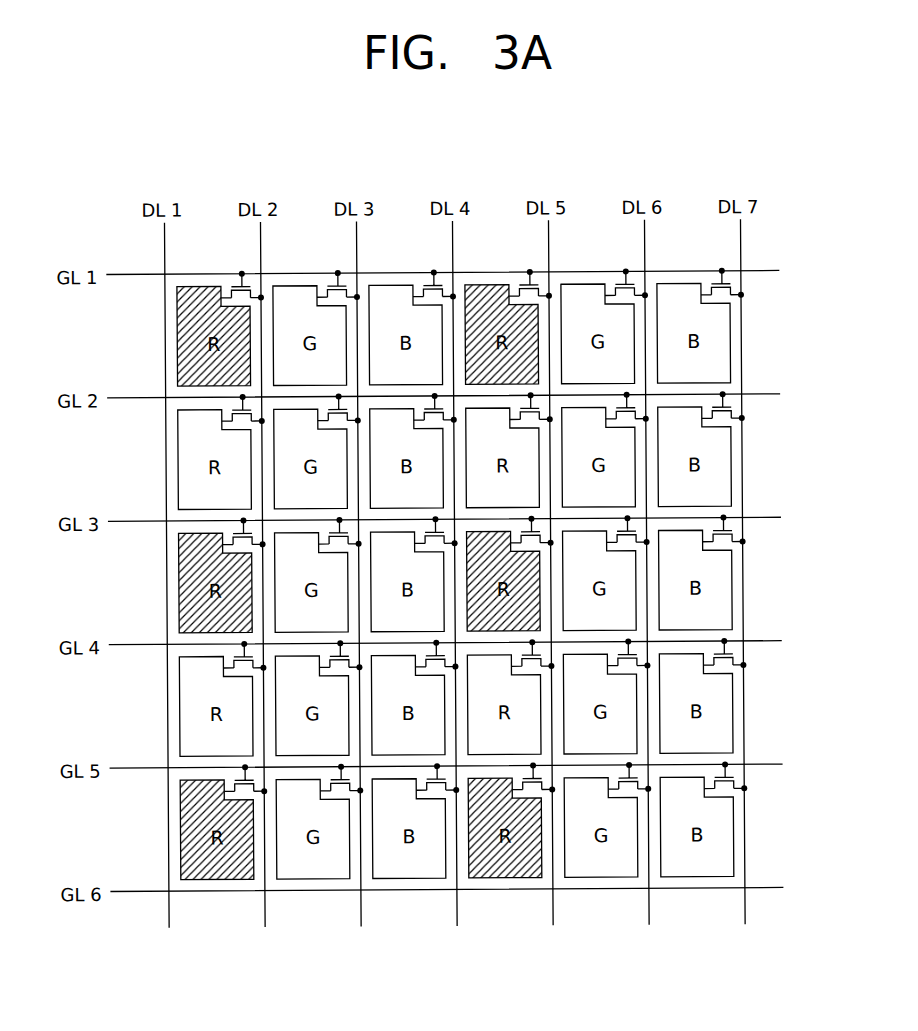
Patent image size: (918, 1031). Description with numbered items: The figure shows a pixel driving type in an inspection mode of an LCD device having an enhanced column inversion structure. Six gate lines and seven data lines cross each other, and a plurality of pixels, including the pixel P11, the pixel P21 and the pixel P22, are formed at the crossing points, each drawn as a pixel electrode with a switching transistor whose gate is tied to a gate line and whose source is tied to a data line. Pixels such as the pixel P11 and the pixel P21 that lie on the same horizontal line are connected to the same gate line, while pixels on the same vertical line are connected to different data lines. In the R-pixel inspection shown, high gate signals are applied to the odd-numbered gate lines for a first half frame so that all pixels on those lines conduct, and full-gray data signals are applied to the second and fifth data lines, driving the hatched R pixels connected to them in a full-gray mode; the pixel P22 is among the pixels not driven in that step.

The pixel P11 is at (177, 341).
The pixel P21 is at (303, 287).
The pixel P22 is at (293, 512).